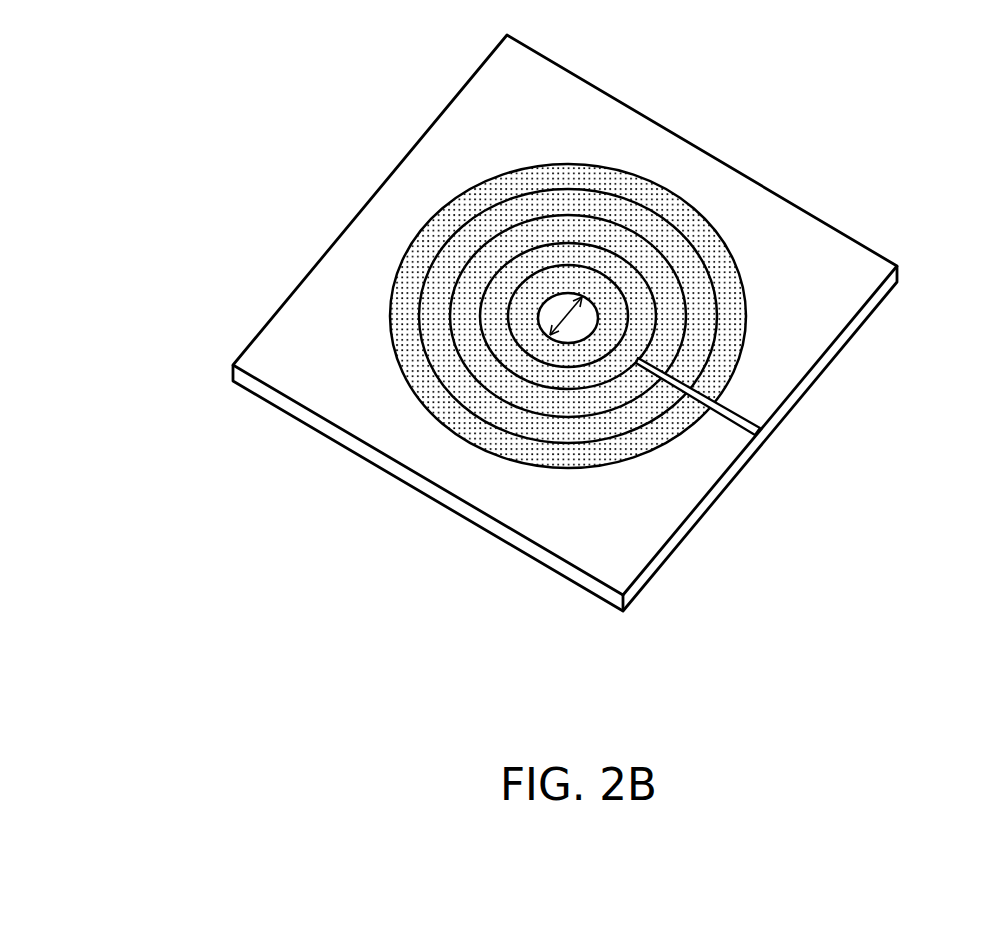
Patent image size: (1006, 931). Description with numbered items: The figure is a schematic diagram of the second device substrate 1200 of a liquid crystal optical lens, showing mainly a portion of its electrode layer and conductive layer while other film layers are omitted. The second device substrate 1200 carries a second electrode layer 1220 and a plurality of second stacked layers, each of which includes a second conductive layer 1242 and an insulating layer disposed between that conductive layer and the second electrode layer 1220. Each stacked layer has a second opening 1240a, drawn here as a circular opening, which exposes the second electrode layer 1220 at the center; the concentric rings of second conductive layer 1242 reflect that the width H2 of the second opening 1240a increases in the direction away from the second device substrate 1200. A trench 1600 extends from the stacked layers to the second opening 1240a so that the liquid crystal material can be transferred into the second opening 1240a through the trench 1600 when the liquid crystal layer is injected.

The second device substrate 1200 is at (566, 372).
The second electrode layer 1220 is at (548, 338).
The second conductive layer 1242 is at (483, 258).
The second opening 1240a is at (587, 330).
The trench 1600 is at (740, 414).
The width of the second opening H2 is at (598, 320).